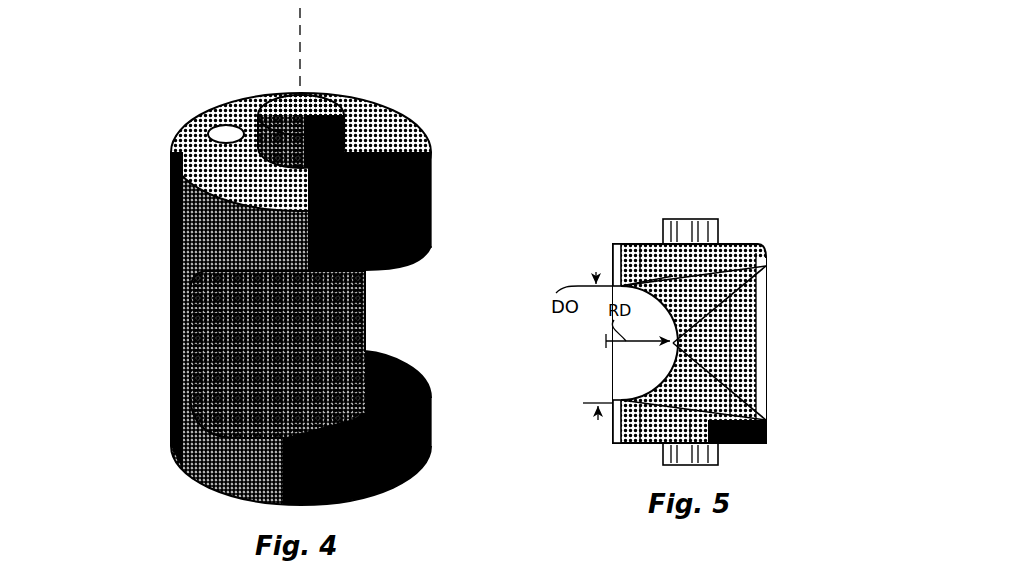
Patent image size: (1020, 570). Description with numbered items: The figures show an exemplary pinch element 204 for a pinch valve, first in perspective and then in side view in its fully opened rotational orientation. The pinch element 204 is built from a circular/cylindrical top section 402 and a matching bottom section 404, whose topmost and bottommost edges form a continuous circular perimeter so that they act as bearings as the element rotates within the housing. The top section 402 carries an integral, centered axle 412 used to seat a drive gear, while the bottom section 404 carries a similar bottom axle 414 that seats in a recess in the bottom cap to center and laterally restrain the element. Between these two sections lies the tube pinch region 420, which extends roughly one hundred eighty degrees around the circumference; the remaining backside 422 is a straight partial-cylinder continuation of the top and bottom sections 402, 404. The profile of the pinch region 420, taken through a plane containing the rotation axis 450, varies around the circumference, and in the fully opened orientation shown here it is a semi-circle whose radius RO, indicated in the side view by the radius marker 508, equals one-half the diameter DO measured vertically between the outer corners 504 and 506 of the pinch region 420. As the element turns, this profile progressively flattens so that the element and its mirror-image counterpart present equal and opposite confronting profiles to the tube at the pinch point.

In FIG. 4, the pinch element 204 is at (444, 146).
In FIG. 5, the pinch element 204 is at (785, 242).
In FIG. 4, the top section 402 is at (163, 190).
In FIG. 5, the top section 402 is at (605, 256).
In FIG. 4, the bottom section 404 is at (163, 440).
In FIG. 5, the bottom section 404 is at (605, 423).
In FIG. 4, the axle 412 is at (315, 100).
In FIG. 5, the axle 412 is at (688, 211).
In FIG. 5, the bottom axle 414 is at (712, 452).
In FIG. 4, the tube pinch region 420 is at (379, 319).
In FIG. 5, the tube pinch region 420 is at (610, 347).
In FIG. 4, the backside 422 is at (161, 320).
In FIG. 4, the rotation axis 450 is at (294, 31).
In FIG. 5, the outer corner 504 is at (602, 270).
In FIG. 5, the outer corner 506 is at (600, 390).
In FIG. 5, the cutout radius 508 is at (598, 333).